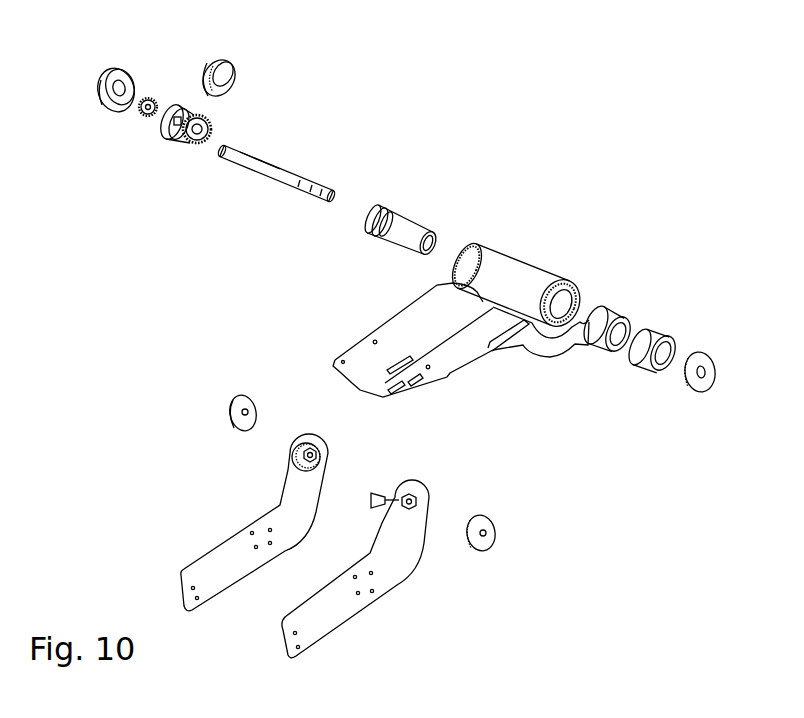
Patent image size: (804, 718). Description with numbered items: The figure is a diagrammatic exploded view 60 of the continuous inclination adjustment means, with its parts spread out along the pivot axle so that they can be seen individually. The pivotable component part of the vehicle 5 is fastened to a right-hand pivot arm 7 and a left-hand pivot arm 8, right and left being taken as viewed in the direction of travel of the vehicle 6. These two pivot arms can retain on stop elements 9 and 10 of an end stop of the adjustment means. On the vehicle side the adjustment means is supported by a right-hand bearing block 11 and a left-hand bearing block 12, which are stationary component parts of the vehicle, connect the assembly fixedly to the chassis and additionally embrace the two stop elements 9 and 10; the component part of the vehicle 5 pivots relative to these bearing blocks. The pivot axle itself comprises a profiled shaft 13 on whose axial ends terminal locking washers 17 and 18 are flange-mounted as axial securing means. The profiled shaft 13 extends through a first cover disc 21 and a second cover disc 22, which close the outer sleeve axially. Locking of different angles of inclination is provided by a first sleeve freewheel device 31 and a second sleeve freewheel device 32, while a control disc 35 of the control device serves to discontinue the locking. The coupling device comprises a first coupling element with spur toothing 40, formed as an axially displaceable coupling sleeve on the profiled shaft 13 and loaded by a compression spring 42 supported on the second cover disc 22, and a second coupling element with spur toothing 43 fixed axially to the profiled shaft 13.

The component part of the vehicle 5 is at (362, 360).
The vehicle 6 is at (587, 203).
The right-hand pivot arm 7 is at (441, 288).
The left-hand pivot arm 8 is at (547, 352).
The stop element 9 is at (287, 458).
The stop element 10 is at (371, 503).
The right-hand bearing block 11 is at (217, 557).
The left-hand bearing block 12 is at (337, 618).
The profiled shaft 13 is at (280, 162).
The locking washer 17 is at (483, 547).
The locking washer 18 is at (237, 398).
The first cover disc 21 is at (700, 394).
The second cover disc 22 is at (122, 68).
The first sleeve freewheel device 31 is at (608, 317).
The second sleeve freewheel device 32 is at (655, 340).
The control disc 35 is at (233, 70).
The first coupling element with spur toothing 40 is at (174, 149).
The compression spring 42 is at (152, 100).
The second coupling element with spur toothing 43 is at (411, 213).
The exploded view 60 is at (593, 498).